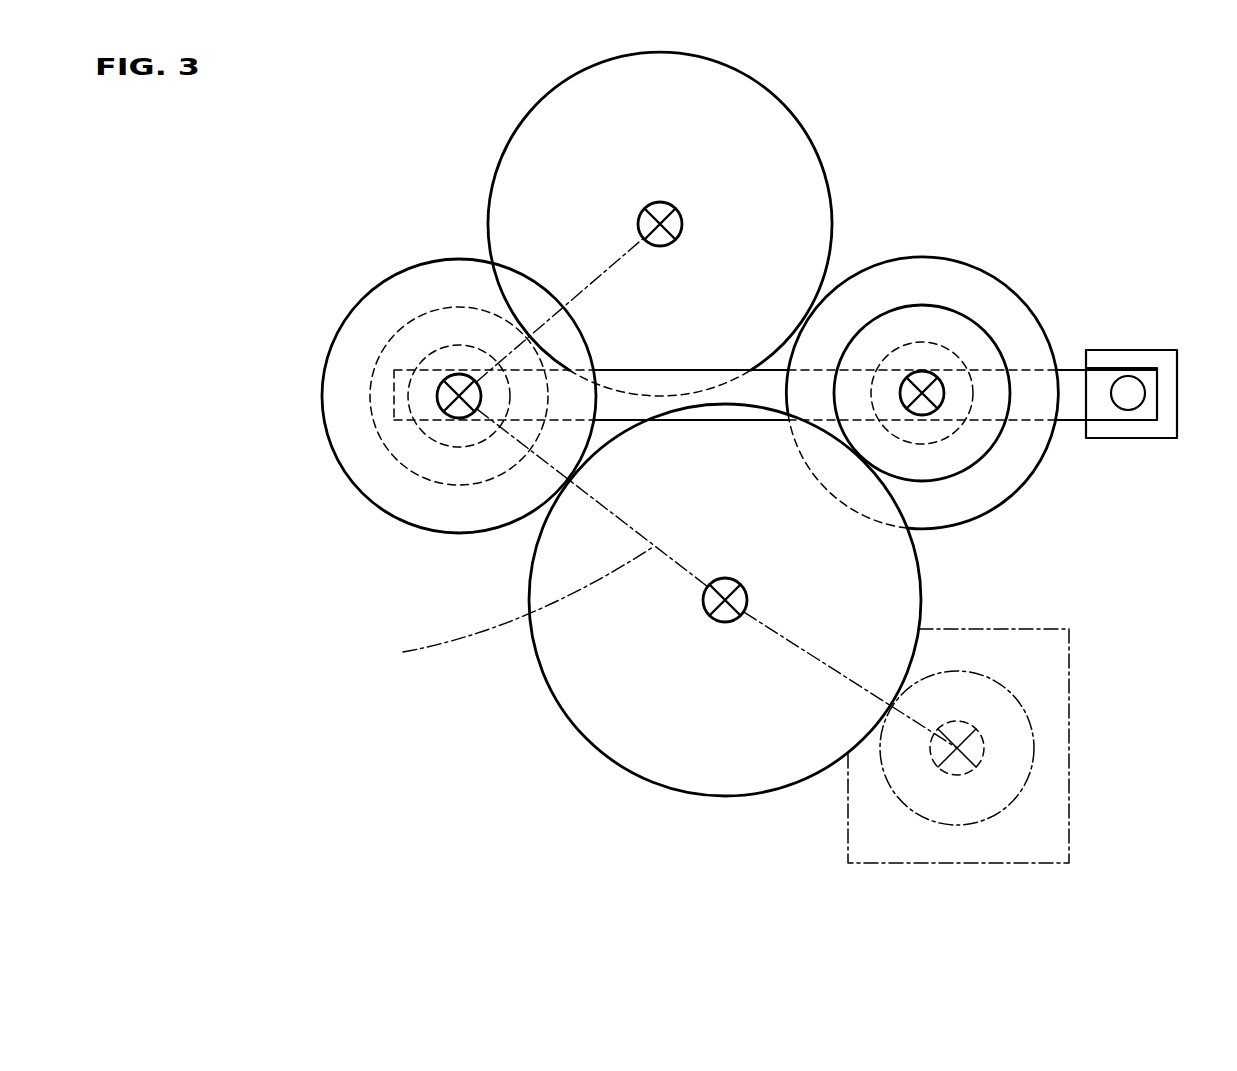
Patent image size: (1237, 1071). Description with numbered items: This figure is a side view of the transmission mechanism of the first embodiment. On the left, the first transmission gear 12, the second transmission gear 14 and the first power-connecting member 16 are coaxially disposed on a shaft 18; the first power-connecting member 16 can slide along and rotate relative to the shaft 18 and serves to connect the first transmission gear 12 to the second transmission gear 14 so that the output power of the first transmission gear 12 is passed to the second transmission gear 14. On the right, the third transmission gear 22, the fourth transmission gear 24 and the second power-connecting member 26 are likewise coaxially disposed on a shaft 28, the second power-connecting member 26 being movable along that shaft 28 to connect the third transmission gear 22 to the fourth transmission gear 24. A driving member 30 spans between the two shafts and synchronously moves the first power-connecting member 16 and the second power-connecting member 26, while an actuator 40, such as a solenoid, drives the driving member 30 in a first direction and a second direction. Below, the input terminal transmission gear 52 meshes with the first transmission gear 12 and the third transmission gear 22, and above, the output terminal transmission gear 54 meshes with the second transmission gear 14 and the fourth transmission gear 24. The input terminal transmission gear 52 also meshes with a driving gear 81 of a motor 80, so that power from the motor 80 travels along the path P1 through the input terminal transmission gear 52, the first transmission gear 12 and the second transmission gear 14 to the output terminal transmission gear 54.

The first transmission gear 12 is at (355, 306).
The second transmission gear 14 is at (422, 314).
The first power-connecting member 16 is at (478, 345).
The shaft 18 is at (438, 393).
The third transmission gear 22 is at (978, 465).
The fourth transmission gear 24 is at (1030, 480).
The second power-connecting member 26 is at (930, 445).
The shaft 28 is at (931, 372).
The driving member 30 is at (1080, 367).
The actuator 40 is at (1158, 440).
The input terminal transmission gear 52 is at (623, 770).
The output terminal transmission gear 54 is at (820, 165).
The motor 80 is at (1070, 745).
The driving gear 81 is at (1018, 792).
The path P1 is at (512, 611).